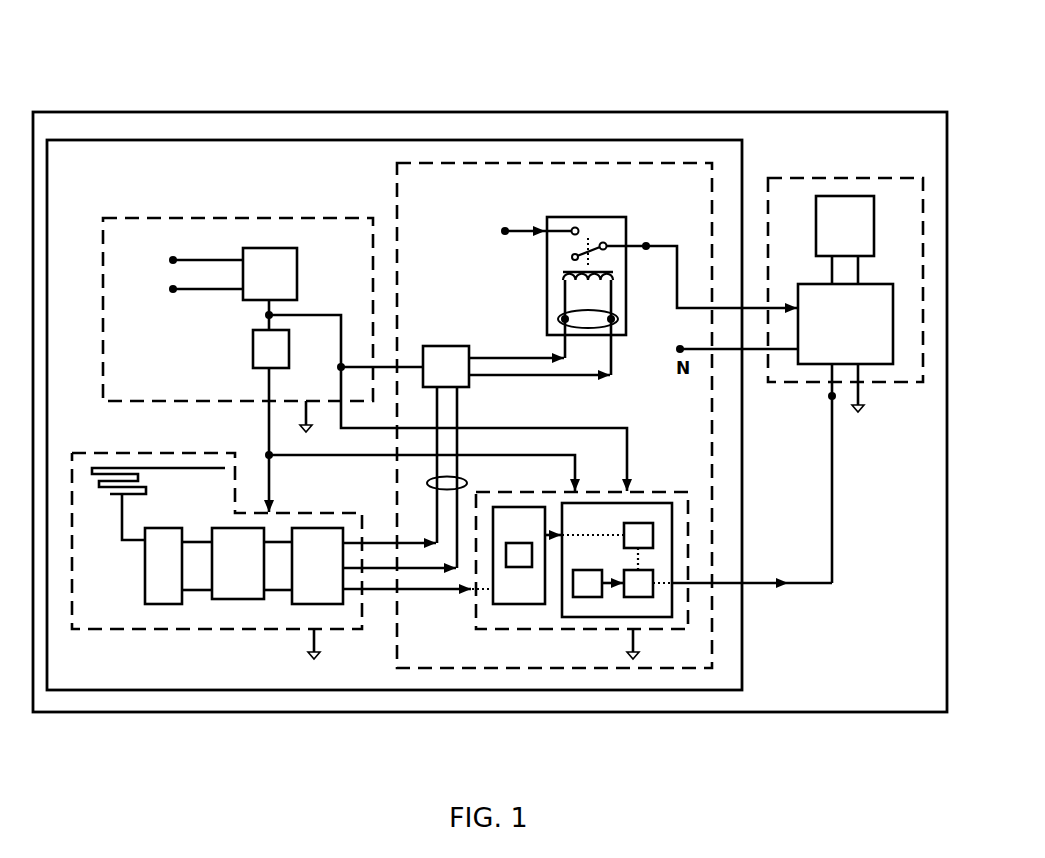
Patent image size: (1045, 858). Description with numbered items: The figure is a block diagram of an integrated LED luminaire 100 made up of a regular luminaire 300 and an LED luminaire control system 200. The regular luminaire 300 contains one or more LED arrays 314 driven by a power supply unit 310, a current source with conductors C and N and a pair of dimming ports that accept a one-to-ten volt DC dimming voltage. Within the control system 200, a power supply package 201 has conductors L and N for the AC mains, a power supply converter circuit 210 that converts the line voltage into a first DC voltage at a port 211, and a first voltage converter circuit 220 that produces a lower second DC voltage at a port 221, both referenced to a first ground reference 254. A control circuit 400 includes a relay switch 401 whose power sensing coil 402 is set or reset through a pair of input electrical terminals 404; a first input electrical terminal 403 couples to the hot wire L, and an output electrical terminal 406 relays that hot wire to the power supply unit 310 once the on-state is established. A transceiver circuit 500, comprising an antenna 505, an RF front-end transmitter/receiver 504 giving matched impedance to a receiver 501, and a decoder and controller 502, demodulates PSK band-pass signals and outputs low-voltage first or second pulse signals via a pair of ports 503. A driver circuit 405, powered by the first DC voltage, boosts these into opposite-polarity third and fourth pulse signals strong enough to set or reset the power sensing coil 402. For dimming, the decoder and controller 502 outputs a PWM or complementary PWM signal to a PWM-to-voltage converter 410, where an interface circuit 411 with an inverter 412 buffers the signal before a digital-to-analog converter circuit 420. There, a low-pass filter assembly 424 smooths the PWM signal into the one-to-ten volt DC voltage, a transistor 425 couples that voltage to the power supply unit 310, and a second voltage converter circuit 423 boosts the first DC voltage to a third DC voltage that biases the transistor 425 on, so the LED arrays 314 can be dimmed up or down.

The integrated LED luminaire 100 is at (422, 111).
The LED luminaire control system 200 is at (512, 139).
The power supply package 201 is at (300, 217).
The power supply converter circuit 210 is at (258, 247).
The port 211 is at (273, 313).
The first voltage converter circuit 220 is at (253, 346).
The port 221 is at (265, 453).
The first ground reference 254 is at (308, 434).
The regular luminaire 300 is at (800, 177).
The power supply unit 310 is at (885, 367).
The LED arrays 314 is at (823, 195).
The control circuit 400 is at (653, 162).
The relay switch 401 is at (628, 303).
The power sensing coil 402 is at (585, 283).
The first input electrical terminal 403 is at (577, 227).
The pair of input electrical terminals 404 is at (562, 323).
The driver circuit 405 is at (449, 345).
The output electrical terminal 406 is at (606, 243).
The PWM-to-voltage converter 410 is at (533, 491).
The interface circuit 411 is at (491, 606).
The inverter 412 is at (517, 568).
The digital-to-analog converter circuit 420 is at (675, 545).
The second voltage converter circuit 423 is at (578, 598).
The low-pass filter assembly 424 is at (652, 522).
The transistor 425 is at (654, 590).
The transceiver circuit 500 is at (224, 631).
The receiver 501 is at (247, 600).
The decoder and controller 502 is at (331, 605).
The pair of ports 503 is at (451, 481).
The RF front-end transmitter/receiver 504 is at (163, 605).
The antenna 505 is at (113, 496).